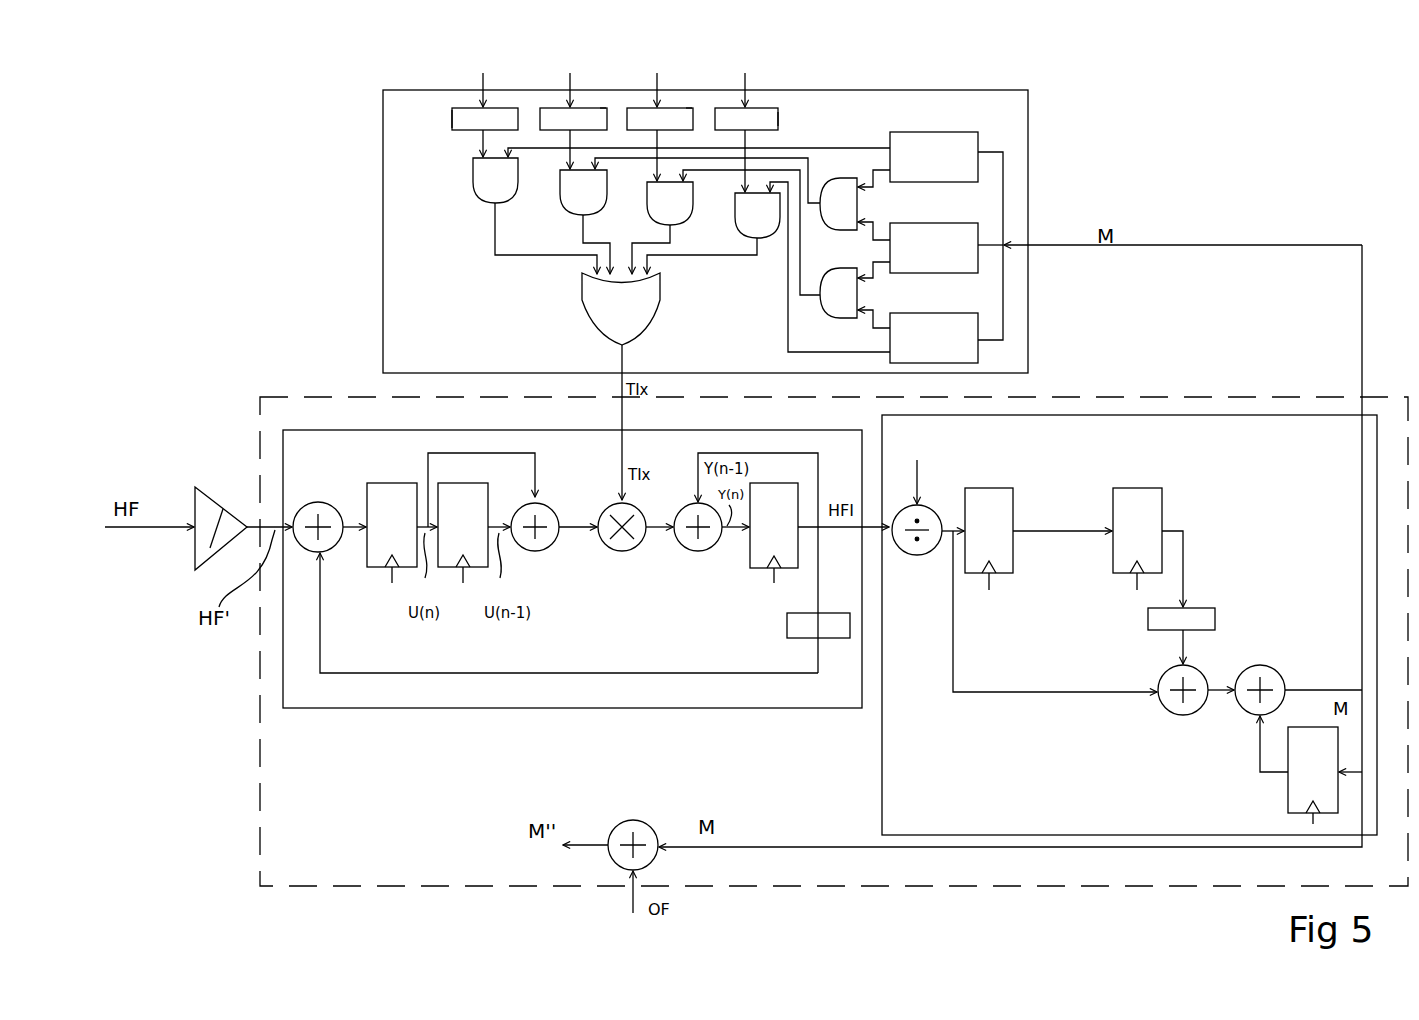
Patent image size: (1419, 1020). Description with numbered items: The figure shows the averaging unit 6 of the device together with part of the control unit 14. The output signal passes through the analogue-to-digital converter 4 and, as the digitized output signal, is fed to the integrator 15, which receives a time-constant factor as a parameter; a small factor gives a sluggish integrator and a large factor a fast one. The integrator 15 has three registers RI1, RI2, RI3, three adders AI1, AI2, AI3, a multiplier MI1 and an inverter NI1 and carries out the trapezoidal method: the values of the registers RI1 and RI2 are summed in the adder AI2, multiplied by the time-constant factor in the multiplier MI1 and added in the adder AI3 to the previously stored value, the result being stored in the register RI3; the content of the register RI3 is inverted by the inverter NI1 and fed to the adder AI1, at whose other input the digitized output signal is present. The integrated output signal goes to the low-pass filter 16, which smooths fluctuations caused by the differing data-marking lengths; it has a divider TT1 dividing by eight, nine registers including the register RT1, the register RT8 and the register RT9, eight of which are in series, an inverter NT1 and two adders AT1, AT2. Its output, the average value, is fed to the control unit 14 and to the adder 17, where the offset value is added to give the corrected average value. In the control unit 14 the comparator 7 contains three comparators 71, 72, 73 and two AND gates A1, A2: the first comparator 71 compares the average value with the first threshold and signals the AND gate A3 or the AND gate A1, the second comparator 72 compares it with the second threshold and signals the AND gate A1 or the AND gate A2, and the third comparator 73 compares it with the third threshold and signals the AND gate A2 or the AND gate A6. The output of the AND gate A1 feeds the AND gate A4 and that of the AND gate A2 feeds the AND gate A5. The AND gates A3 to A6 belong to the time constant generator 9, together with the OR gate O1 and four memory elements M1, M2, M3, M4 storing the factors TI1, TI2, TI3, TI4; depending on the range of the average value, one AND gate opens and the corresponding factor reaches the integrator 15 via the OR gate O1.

The analogue-to-digital converter 4 is at (218, 494).
The averaging unit 6 is at (258, 398).
The comparator 7 is at (876, 113).
The time constant generator 9 is at (462, 312).
The control unit 14 is at (1035, 100).
The integrator 15 is at (322, 710).
The low-pass filter 16 is at (880, 770).
The adder 17 is at (645, 812).
The first comparator 71 is at (930, 130).
The second comparator 72 is at (932, 222).
The third comparator 73 is at (932, 312).
The AND gate A1 is at (826, 228).
The AND gate A2 is at (822, 322).
The AND gate A3 is at (464, 203).
The AND gate A4 is at (548, 210).
The AND gate A5 is at (647, 220).
The AND gate A6 is at (734, 224).
The OR gate O1 is at (592, 312).
The factor TI1 is at (485, 101).
The factor TI2 is at (573, 101).
The factor TI3 is at (660, 101).
The factor TI4 is at (746, 101).
The memory element M1 is at (448, 122).
The memory element M2 is at (592, 108).
The memory element M3 is at (682, 108).
The memory element M4 is at (782, 122).
The adder AI1 is at (344, 505).
The adder AI2 is at (558, 550).
The adder AI3 is at (673, 550).
The multiplier MI1 is at (598, 550).
The register RI1 is at (392, 533).
The register RI2 is at (463, 533).
The register RI3 is at (774, 533).
The inverter NI1 is at (780, 614).
The divider TT1 is at (917, 495).
The register RT1 is at (989, 539).
The register RT8 is at (1137, 539).
The register RT9 is at (1325, 775).
The inverter NT1 is at (1212, 600).
The adder AT1 is at (1189, 710).
The adder AT2 is at (1283, 680).